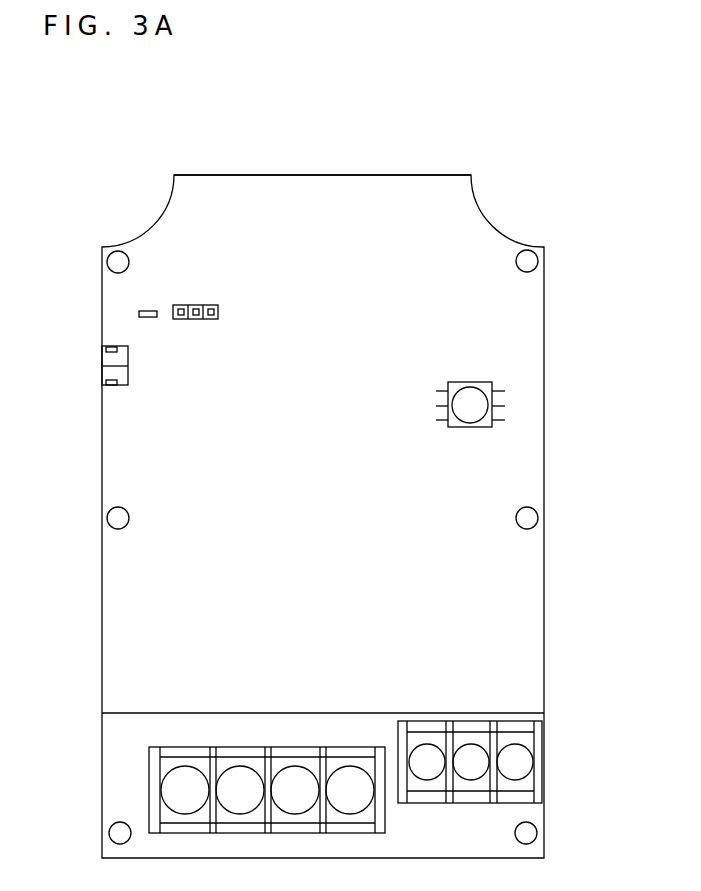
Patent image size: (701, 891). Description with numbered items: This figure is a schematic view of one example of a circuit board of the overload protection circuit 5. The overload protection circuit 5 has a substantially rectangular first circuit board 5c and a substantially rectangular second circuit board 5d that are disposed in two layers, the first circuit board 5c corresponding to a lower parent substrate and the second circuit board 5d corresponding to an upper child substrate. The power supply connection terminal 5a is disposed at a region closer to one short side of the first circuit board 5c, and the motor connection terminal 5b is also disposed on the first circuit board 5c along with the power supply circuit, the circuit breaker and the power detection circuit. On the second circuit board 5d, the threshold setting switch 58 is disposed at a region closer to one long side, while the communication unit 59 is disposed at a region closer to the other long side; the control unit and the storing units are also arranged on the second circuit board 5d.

The overload protection circuit 5 is at (423, 111).
The power supply connection terminal 5a is at (152, 787).
The motor connection terminal 5b is at (538, 749).
The first circuit board 5c is at (538, 816).
The second circuit board 5d is at (334, 186).
The threshold setting switch 58 is at (476, 382).
The communication unit 59 is at (104, 359).